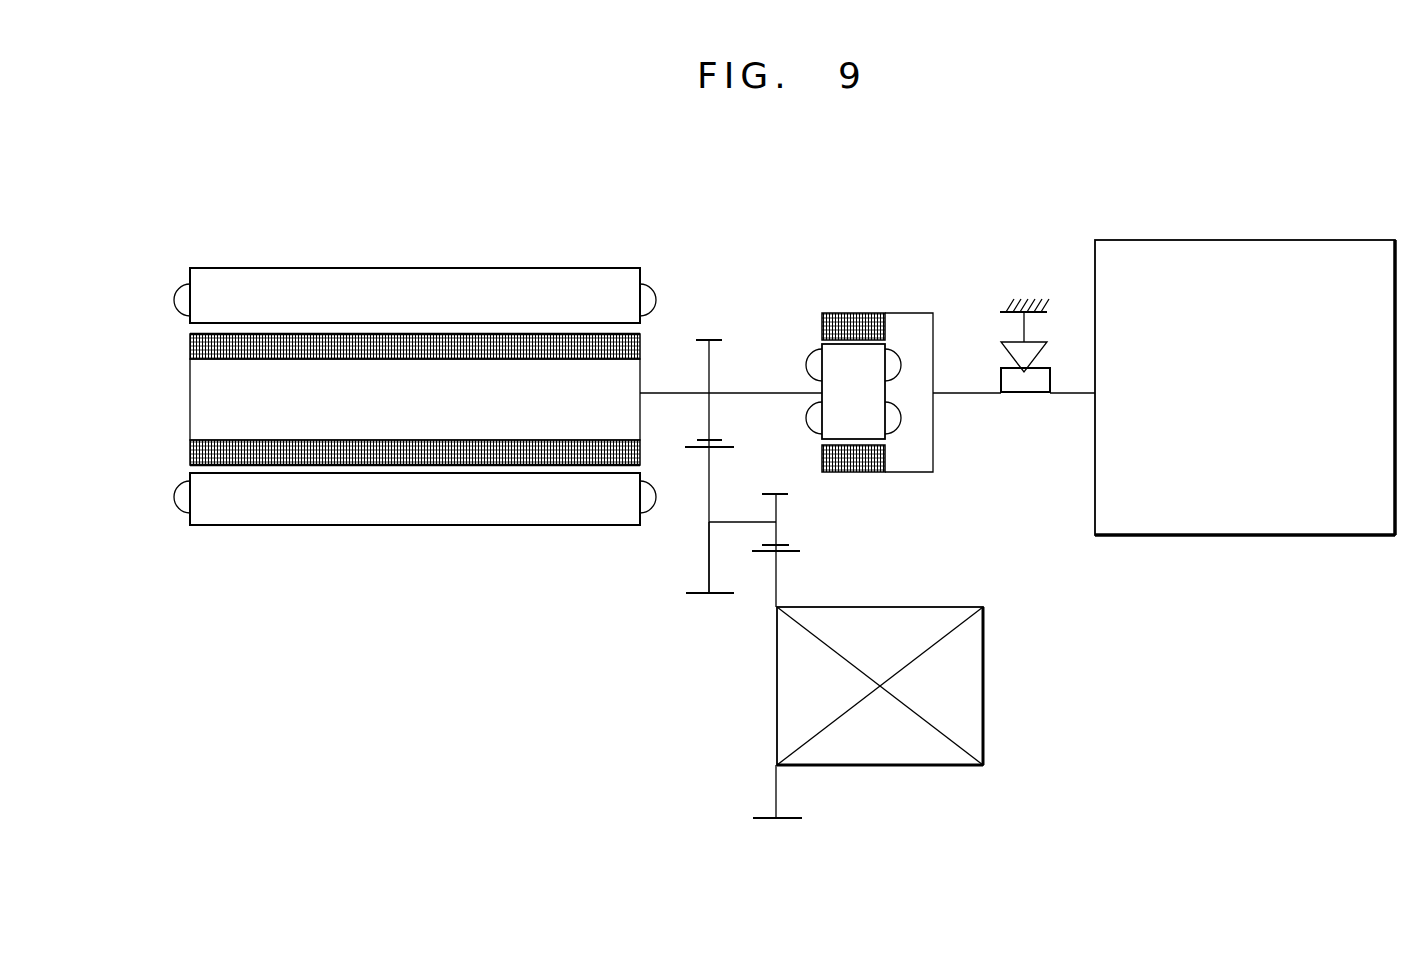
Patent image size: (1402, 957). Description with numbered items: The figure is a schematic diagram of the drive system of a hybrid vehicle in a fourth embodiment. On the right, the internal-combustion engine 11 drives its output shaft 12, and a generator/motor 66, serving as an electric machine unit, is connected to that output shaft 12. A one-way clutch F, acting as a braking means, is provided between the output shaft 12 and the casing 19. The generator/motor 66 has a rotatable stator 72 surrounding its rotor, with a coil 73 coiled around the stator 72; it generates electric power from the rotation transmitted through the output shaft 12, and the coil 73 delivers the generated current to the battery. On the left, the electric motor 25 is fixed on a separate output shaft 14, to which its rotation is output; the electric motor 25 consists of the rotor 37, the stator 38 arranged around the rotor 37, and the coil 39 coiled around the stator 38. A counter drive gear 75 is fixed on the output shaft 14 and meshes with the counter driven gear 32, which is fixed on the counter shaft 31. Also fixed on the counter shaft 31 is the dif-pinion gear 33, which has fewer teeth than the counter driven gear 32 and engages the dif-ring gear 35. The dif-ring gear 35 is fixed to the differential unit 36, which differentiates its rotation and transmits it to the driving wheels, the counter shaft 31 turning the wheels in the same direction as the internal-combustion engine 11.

The internal-combustion engine 11 is at (1258, 240).
The output shaft 12 is at (949, 393).
The output shaft 14 is at (742, 393).
The casing 19 is at (1026, 298).
The electric motor 25 is at (384, 357).
The counter shaft 31 is at (752, 522).
The counter driven gear 32 is at (720, 597).
The dif-pinion gear 33 is at (781, 494).
The dif-ring gear 35 is at (790, 818).
The differential unit 36 is at (937, 605).
The rotor 37 is at (190, 403).
The stator 38 is at (247, 283).
The coil 39 is at (174, 294).
The generator/motor 66 is at (851, 321).
The stator 72 is at (877, 313).
The coil 73 is at (806, 360).
The counter drive gear 75 is at (705, 340).